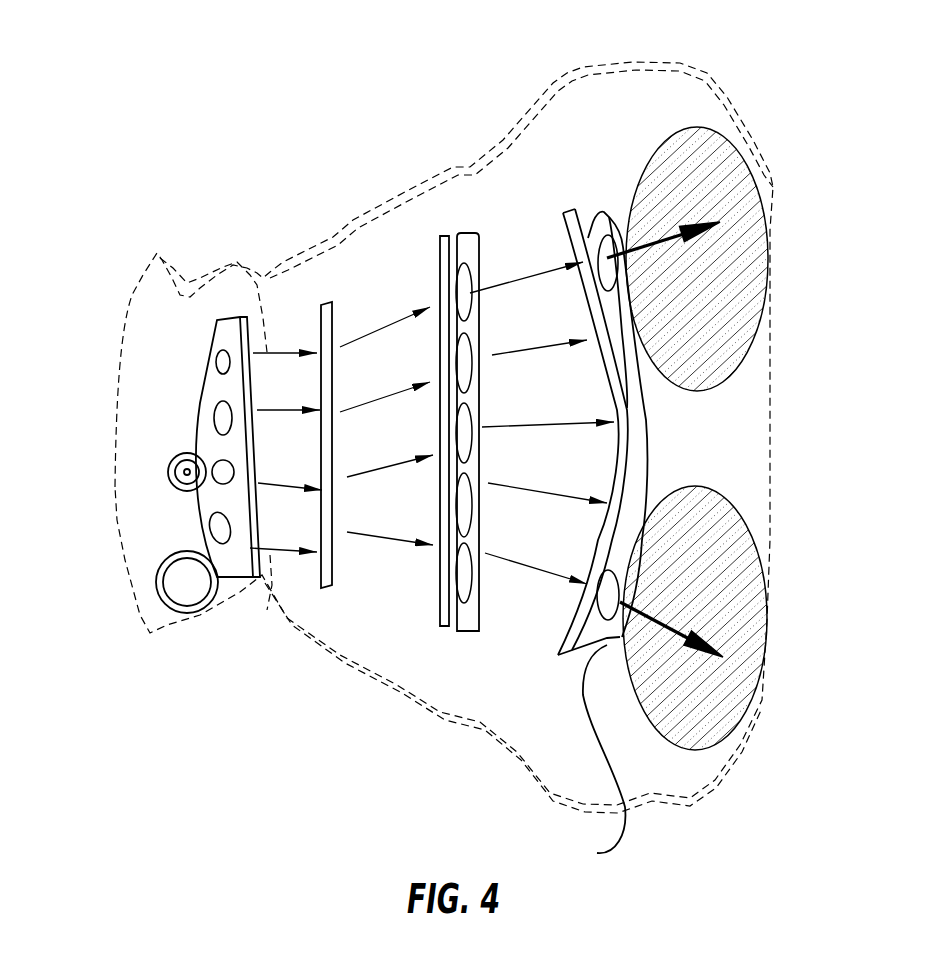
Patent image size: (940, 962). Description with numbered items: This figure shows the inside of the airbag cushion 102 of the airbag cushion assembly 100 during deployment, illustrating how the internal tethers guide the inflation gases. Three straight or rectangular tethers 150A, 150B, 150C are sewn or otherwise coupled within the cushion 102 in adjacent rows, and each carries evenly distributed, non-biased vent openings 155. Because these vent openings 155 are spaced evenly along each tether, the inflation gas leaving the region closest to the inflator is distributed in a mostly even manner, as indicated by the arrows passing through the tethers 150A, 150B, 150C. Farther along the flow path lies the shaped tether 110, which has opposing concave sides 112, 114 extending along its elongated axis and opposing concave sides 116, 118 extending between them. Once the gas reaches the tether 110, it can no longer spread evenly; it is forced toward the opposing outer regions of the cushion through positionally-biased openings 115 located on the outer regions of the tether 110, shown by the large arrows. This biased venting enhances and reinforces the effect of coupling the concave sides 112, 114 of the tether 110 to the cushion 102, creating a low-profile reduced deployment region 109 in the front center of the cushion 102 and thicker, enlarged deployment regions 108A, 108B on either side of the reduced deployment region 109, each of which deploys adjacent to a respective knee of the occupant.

The airbag assembly 100 is at (825, 85).
The airbag cushion 102 is at (467, 160).
The enlarged deployment region 108A is at (740, 593).
The enlarged deployment region 108B is at (740, 273).
The reduced deployment region 109 is at (730, 445).
The tether 110 is at (612, 204).
The concave side 112 is at (617, 415).
The concave side 114 is at (640, 433).
The positionally-biased vent openings 115 is at (614, 277).
The concave side 116 is at (590, 236).
The concave side 118 is at (592, 758).
The straight tether 150A is at (458, 623).
The straight tether 150B is at (328, 586).
The straight tether 150C is at (232, 568).
The vent openings 155 is at (224, 418).